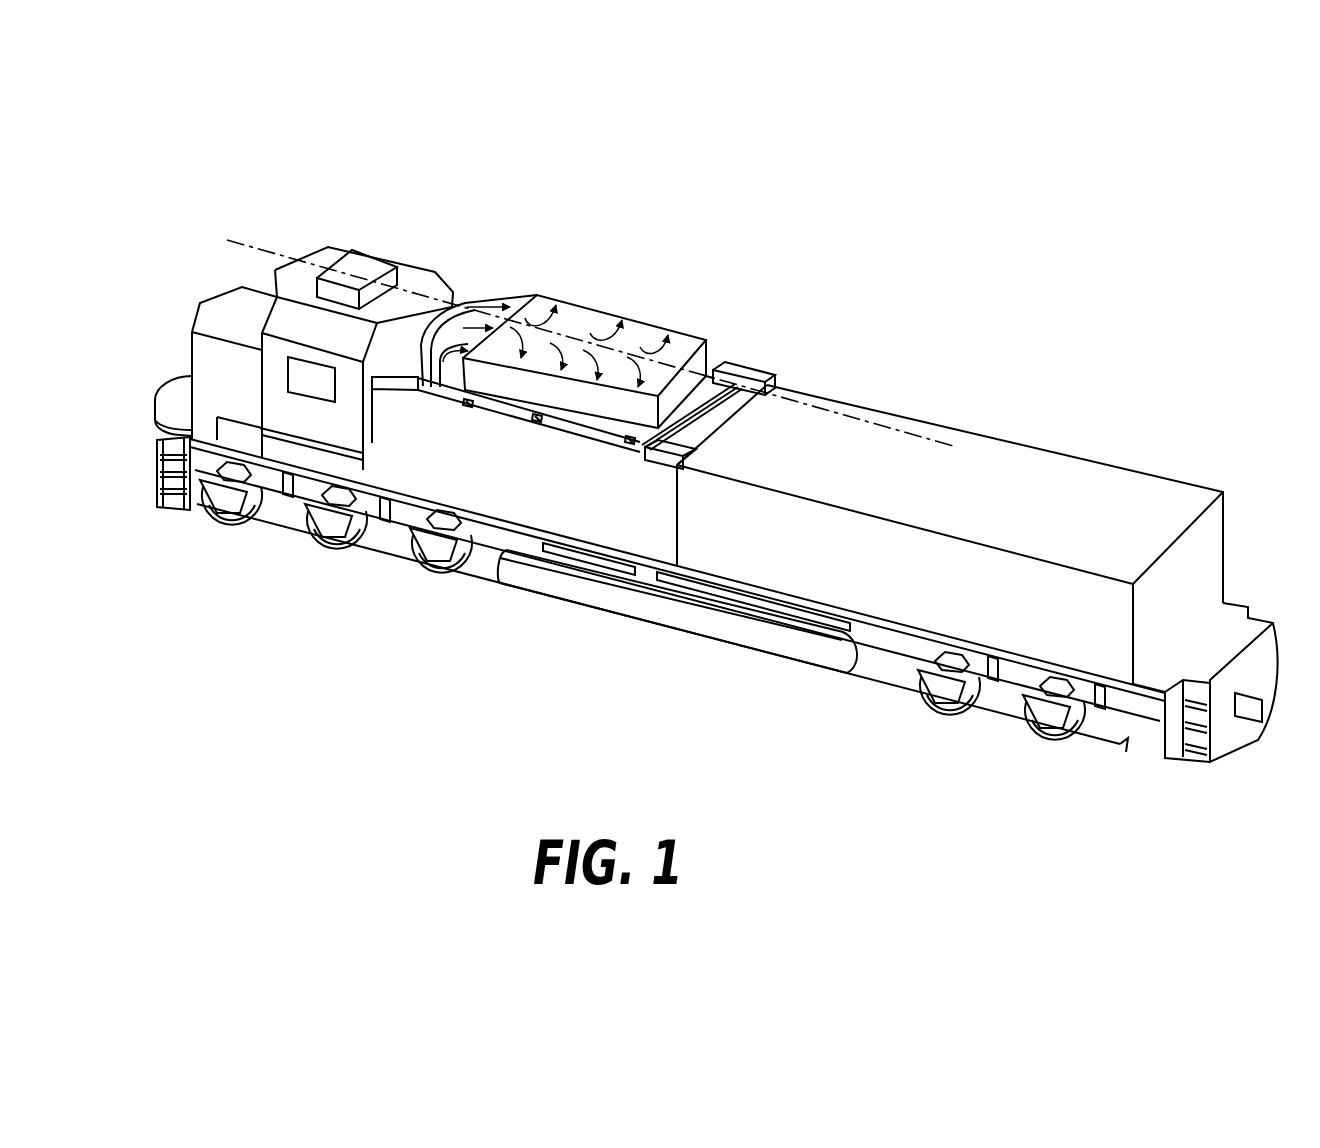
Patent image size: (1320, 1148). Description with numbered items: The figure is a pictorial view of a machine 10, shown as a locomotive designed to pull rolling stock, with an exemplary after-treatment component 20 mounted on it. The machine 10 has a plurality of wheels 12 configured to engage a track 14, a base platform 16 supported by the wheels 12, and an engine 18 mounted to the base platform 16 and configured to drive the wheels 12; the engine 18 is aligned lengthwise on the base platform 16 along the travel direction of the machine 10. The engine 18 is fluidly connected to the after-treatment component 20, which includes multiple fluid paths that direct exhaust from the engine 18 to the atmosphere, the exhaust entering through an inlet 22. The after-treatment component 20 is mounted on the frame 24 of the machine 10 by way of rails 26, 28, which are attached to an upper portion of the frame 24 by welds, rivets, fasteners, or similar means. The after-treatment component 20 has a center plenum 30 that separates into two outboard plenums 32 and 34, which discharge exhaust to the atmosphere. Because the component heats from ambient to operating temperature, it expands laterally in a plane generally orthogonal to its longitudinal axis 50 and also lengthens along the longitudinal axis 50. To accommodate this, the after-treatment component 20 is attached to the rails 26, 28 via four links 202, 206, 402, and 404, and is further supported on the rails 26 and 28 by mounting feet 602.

The machine 10 is at (543, 158).
The longitudinal axis 50 is at (258, 247).
The base platform 16 is at (175, 397).
The center plenum 30 is at (585, 345).
The after-treatment component 20 is at (630, 302).
The outboard plenum 34 is at (712, 378).
The rail 28 is at (745, 373).
The frame 24 is at (915, 418).
The inlet 22 is at (430, 402).
The link 206 is at (430, 392).
The link 202 is at (452, 398).
The mounting feet 602 is at (537, 423).
The outboard plenum 32 is at (633, 443).
The rail 26 is at (650, 453).
The engine 18 is at (565, 520).
The link 402 is at (690, 448).
The link 404 is at (768, 400).
The wheels 12 is at (955, 695).
The track 14 is at (1017, 730).